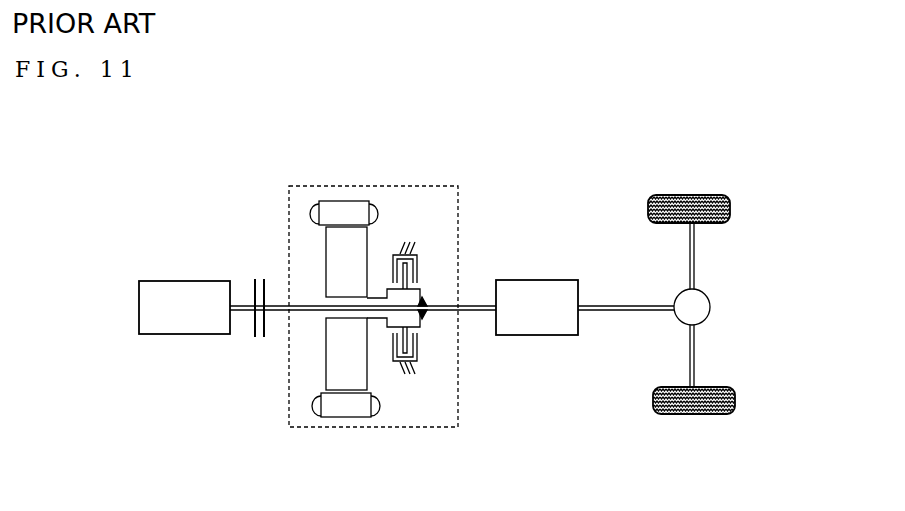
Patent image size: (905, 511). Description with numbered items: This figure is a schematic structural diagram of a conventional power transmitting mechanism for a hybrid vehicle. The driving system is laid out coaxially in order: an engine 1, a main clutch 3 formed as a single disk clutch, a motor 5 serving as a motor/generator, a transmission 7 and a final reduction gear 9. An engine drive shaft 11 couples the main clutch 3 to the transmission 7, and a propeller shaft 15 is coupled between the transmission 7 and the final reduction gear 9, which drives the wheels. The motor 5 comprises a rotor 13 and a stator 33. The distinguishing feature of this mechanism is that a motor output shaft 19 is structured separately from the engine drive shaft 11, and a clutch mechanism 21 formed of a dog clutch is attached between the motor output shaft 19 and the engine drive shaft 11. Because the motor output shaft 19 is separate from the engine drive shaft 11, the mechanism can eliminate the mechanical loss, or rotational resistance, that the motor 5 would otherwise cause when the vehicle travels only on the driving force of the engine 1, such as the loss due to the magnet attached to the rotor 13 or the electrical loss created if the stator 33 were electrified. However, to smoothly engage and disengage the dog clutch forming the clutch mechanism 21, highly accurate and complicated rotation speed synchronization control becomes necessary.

The engine 1 is at (168, 291).
The main clutch 3 is at (257, 280).
The motor 5 is at (337, 197).
The transmission 7 is at (531, 290).
The final reduction gear 9 is at (697, 307).
The engine drive shaft 11 is at (442, 311).
The rotor 13 is at (337, 369).
The propeller shaft 15 is at (630, 305).
The motor output shaft 19 is at (342, 297).
The clutch mechanism 21 is at (419, 271).
The stator 33 is at (345, 413).